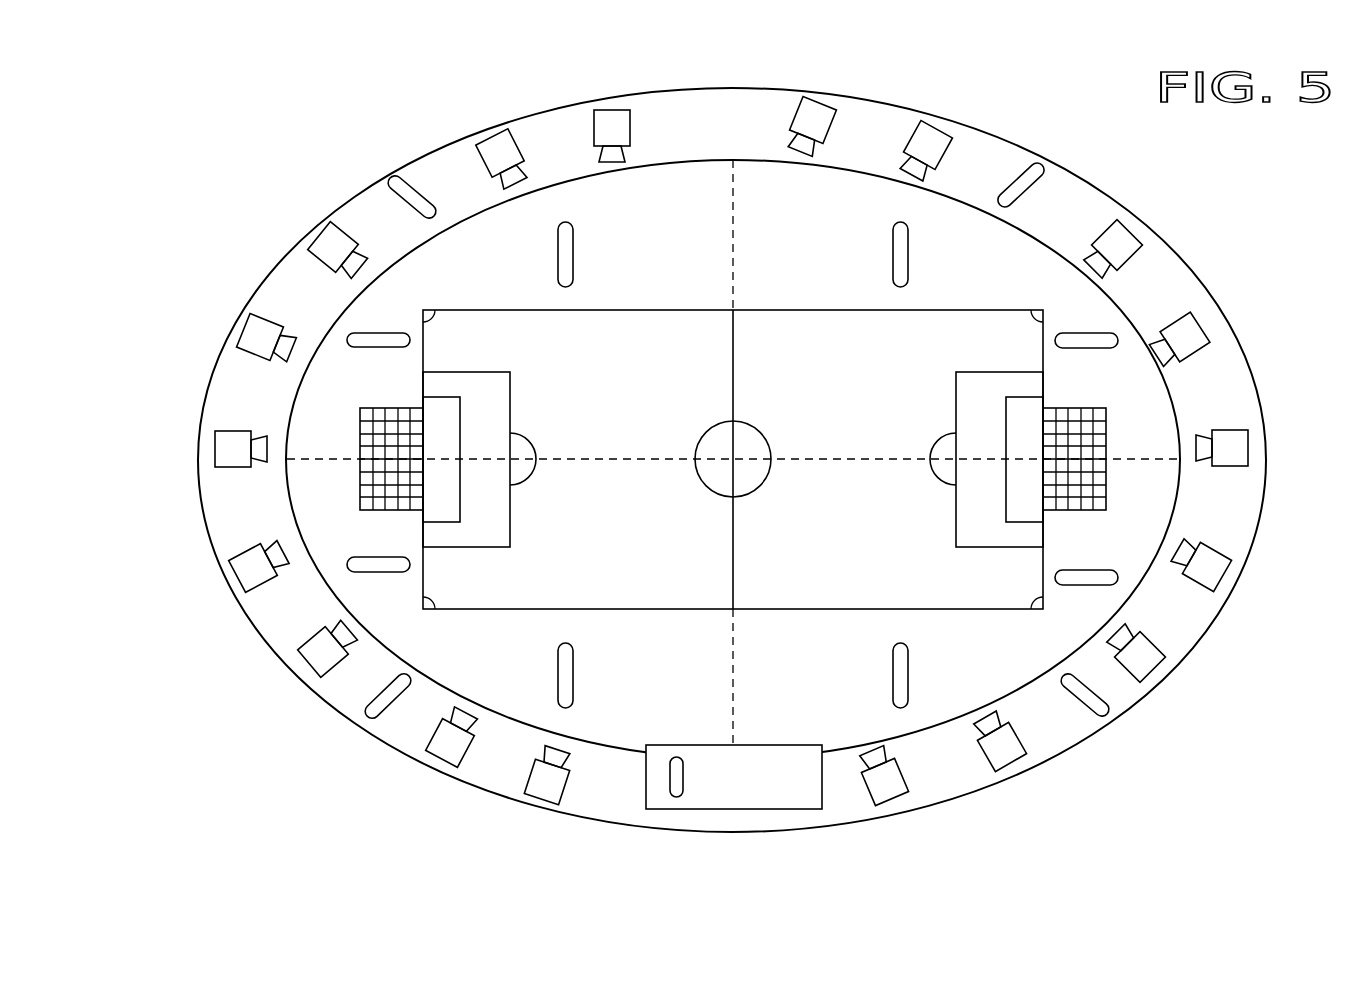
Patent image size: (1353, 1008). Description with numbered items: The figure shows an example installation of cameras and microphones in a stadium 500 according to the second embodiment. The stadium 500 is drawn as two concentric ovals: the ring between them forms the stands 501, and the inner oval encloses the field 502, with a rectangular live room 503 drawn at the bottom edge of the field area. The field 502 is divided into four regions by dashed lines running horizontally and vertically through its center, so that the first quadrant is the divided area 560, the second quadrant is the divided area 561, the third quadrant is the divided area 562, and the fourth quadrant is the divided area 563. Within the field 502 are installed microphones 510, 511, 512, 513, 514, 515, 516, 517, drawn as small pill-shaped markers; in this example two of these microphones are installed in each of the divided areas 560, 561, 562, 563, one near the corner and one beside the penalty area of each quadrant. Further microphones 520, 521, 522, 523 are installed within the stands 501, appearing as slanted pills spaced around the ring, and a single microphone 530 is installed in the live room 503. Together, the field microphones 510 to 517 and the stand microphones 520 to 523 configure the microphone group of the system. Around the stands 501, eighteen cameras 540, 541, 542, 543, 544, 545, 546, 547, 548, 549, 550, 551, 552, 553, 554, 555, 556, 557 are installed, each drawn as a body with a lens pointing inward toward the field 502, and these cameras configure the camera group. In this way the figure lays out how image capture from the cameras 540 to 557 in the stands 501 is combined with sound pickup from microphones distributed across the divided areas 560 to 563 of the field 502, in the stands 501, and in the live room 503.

The stadium 500 is at (767, 460).
The stands 501 is at (1262, 508).
The field 502 is at (708, 159).
The live room 503 is at (785, 810).
The microphone 510 is at (910, 254).
The microphone 511 is at (556, 254).
The microphone 512 is at (379, 349).
The microphone 513 is at (381, 573).
The microphone 514 is at (556, 675).
The microphone 515 is at (910, 675).
The microphone 516 is at (1088, 569).
The microphone 517 is at (1086, 349).
The microphone 520 is at (1036, 166).
The microphone 521 is at (392, 176).
The microphone 522 is at (368, 716).
The microphone 523 is at (1108, 713).
The microphone 530 is at (677, 799).
The camera 540 is at (936, 126).
The camera 541 is at (826, 101).
The camera 542 is at (610, 109).
The camera 543 is at (496, 134).
The camera 544 is at (316, 232).
The camera 545 is at (242, 325).
The camera 546 is at (215, 448).
The camera 547 is at (234, 578).
The camera 548 is at (304, 662).
The camera 549 is at (440, 764).
The camera 550 is at (540, 803).
The camera 551 is at (889, 803).
The camera 552 is at (1010, 768).
The camera 553 is at (1158, 675).
The camera 554 is at (1226, 582).
The camera 555 is at (1248, 445).
The camera 556 is at (1204, 322).
The camera 557 is at (1135, 229).
The divided area 560 is at (797, 234).
The divided area 561 is at (654, 234).
The divided area 562 is at (654, 680).
The divided area 563 is at (798, 680).